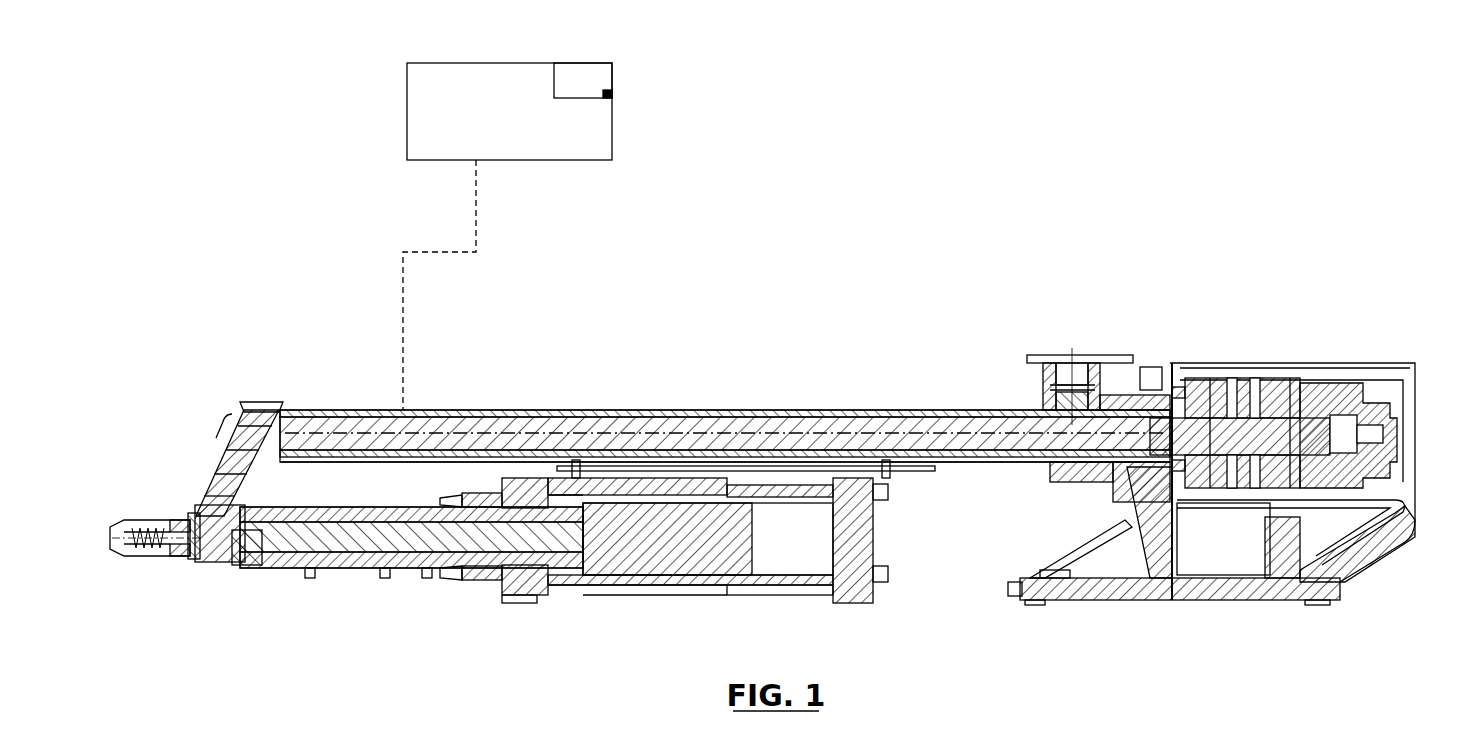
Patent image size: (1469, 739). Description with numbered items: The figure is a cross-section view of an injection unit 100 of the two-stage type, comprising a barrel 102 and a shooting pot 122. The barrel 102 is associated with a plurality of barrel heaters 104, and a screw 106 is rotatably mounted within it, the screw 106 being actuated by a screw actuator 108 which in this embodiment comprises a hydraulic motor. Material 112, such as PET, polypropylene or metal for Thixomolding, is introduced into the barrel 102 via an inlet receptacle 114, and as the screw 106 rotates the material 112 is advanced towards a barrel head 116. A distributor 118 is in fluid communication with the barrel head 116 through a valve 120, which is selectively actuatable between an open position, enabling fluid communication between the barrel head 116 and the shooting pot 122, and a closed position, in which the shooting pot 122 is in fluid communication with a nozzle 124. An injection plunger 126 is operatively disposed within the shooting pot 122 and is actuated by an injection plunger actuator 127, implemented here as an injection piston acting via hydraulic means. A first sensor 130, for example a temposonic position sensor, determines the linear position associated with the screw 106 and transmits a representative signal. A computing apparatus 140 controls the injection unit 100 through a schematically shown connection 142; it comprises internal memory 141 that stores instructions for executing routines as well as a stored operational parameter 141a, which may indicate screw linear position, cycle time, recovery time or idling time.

The injection unit 100 is at (762, 377).
The barrel 102 is at (762, 377).
The barrel heaters 104 is at (725, 386).
The screw 106 is at (565, 430).
The screw actuator 108 is at (1276, 347).
The material 112 is at (1050, 402).
The inlet receptacle 114 is at (1072, 365).
The barrel head 116 is at (218, 465).
The distributor 118 is at (200, 503).
The valve 120 is at (203, 557).
The shooting pot 122 is at (260, 560).
The nozzle 124 is at (123, 553).
The injection plunger 126 is at (377, 533).
The injection plunger actuator 127 is at (668, 612).
The first sensor 130 is at (1150, 367).
The computing apparatus 140 is at (493, 123).
The internal memory 141 is at (566, 90).
The stored operational parameter 141a is at (613, 95).
The connection 142 is at (476, 245).